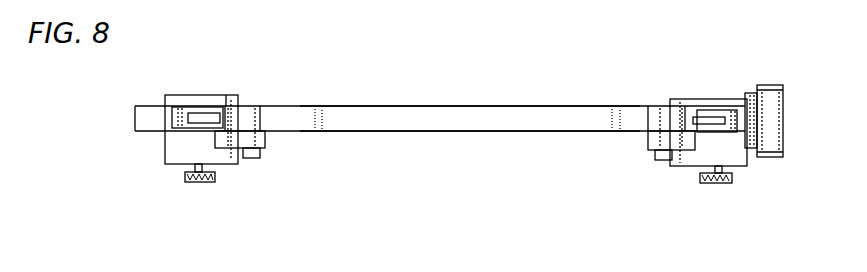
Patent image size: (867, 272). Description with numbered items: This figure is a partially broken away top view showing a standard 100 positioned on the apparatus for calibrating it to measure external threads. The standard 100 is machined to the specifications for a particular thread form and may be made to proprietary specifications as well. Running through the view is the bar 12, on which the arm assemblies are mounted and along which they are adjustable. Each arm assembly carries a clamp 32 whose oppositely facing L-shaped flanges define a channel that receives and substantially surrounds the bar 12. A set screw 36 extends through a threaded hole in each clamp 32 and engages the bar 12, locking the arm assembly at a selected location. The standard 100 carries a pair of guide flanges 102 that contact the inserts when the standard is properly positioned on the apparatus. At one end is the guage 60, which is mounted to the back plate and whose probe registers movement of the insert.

The bar 12 is at (147, 104).
The standard 100 is at (453, 113).
The clamp 32 is at (168, 148).
The set screw 36 is at (200, 183).
The guide flange 102 is at (230, 140).
The guage 60 is at (775, 128).